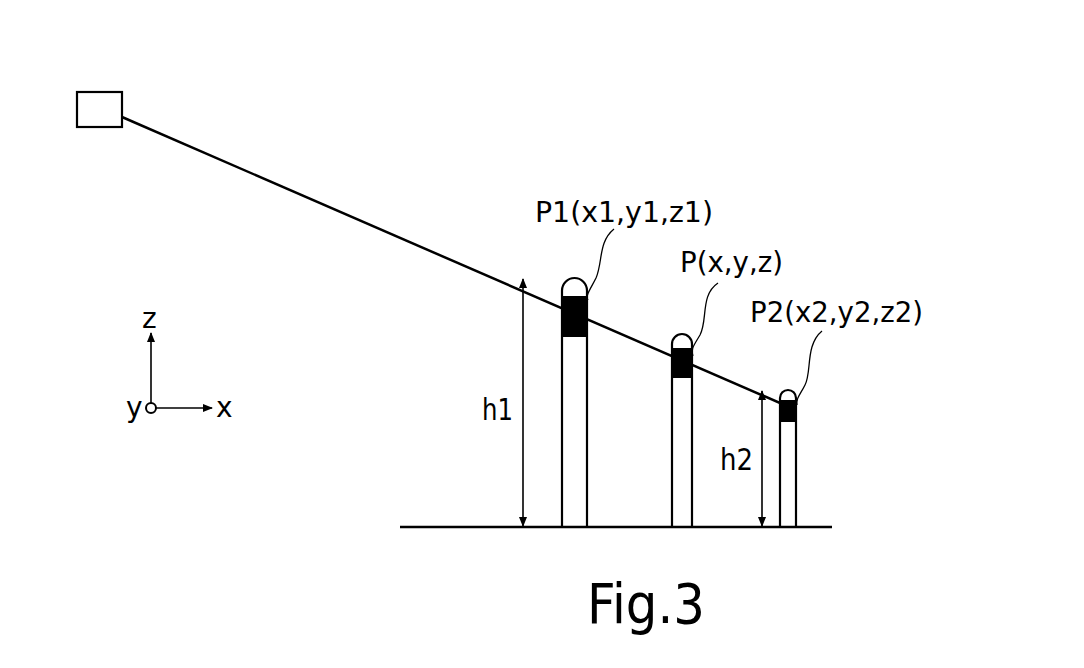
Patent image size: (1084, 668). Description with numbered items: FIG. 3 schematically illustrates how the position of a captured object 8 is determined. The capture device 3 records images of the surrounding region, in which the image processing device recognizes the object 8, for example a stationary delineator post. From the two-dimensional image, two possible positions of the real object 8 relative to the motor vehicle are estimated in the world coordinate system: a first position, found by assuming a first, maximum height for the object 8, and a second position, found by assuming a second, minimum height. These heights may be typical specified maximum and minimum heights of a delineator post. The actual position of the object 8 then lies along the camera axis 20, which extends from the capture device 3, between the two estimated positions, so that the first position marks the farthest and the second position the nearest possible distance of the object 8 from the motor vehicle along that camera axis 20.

The capture device 3 is at (108, 92).
The camera axis 20 is at (314, 200).
The object 8 is at (676, 331).